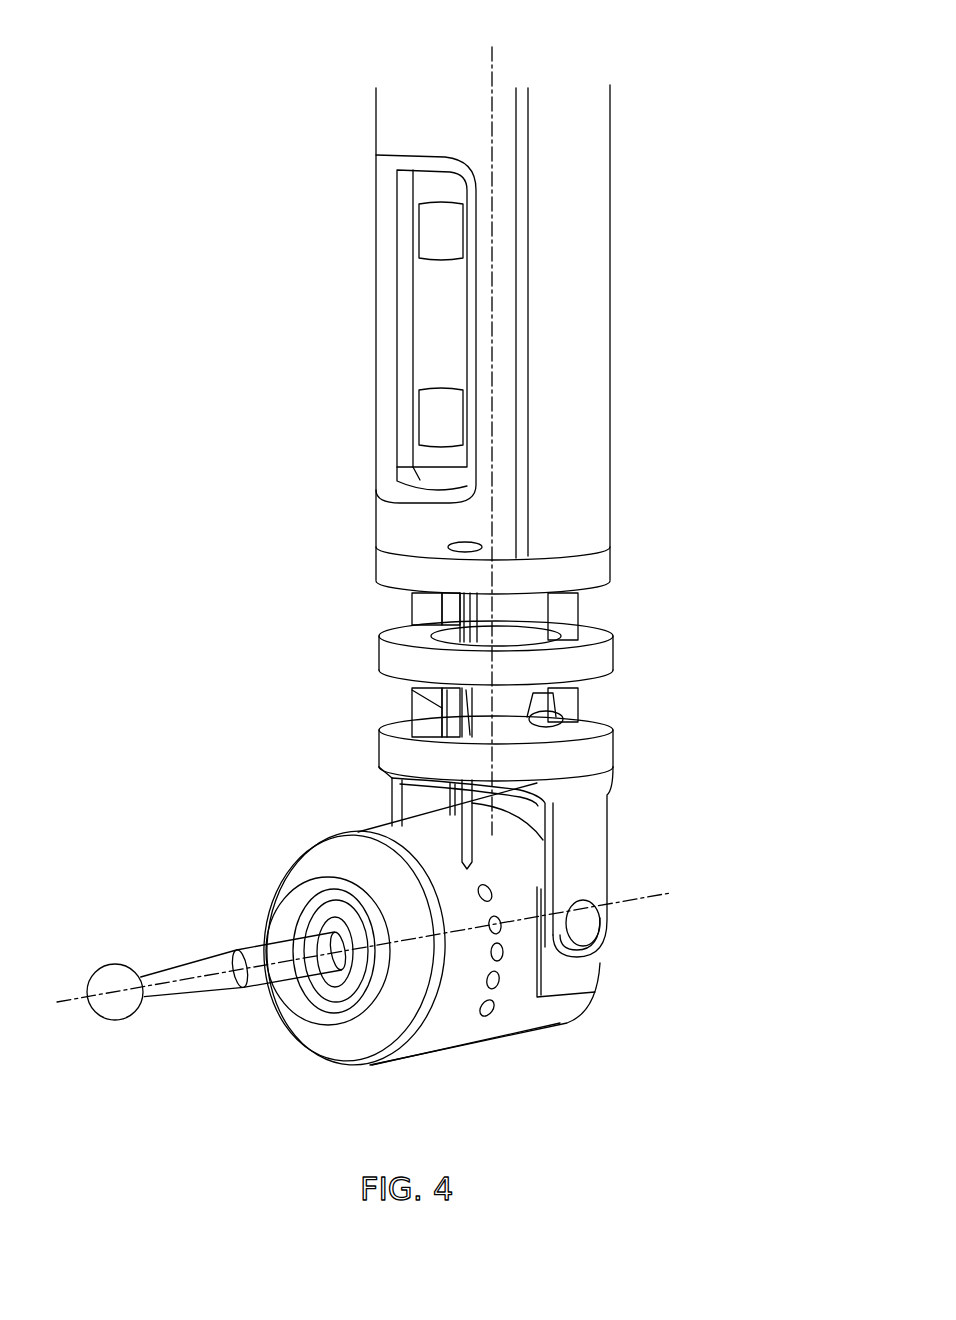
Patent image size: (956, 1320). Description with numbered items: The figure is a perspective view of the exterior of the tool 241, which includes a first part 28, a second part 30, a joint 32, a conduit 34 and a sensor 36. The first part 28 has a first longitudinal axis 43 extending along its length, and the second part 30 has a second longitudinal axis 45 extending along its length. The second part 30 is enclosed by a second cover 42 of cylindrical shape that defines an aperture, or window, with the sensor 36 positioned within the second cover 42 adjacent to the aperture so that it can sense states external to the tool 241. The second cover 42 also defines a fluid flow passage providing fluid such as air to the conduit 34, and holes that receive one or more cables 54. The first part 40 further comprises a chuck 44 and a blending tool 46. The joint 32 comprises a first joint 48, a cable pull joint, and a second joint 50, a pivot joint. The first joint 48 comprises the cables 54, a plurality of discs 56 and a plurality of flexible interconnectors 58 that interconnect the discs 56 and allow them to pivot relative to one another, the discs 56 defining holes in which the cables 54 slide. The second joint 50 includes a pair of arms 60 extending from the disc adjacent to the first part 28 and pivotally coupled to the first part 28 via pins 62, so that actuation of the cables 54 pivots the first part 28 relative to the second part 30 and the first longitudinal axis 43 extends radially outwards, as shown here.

The tool 241 is at (173, 227).
The second longitudinal axis 45 is at (492, 73).
The second part 30 is at (645, 123).
The second cover 42 is at (605, 320).
The sensor 36 is at (425, 303).
The first joint 48 is at (317, 683).
The joint 32 is at (673, 638).
The discs 56 is at (612, 750).
The flexible interconnectors 58 is at (567, 610).
The conduit 34 is at (540, 626).
The cables 54 is at (415, 610).
The second joint 50 is at (630, 938).
The arms 60 is at (393, 802).
The pins 62 is at (588, 930).
The first part 28 is at (375, 1082).
The first part 40 is at (467, 1043).
The chuck 44 is at (327, 913).
The blending tool 46 is at (122, 1060).
The first longitudinal axis 43 is at (67, 1000).